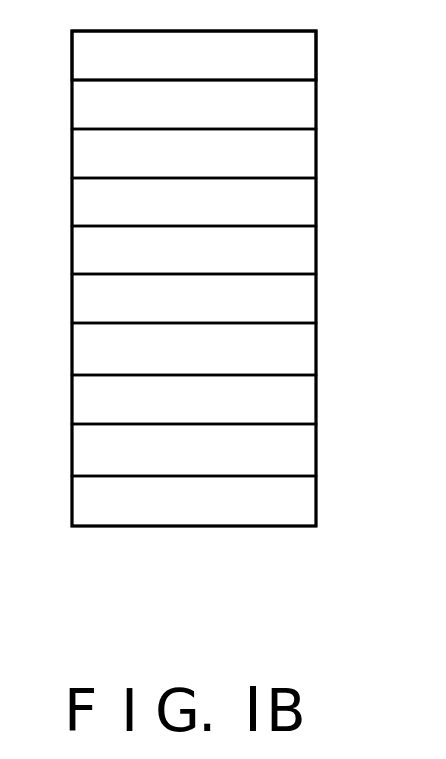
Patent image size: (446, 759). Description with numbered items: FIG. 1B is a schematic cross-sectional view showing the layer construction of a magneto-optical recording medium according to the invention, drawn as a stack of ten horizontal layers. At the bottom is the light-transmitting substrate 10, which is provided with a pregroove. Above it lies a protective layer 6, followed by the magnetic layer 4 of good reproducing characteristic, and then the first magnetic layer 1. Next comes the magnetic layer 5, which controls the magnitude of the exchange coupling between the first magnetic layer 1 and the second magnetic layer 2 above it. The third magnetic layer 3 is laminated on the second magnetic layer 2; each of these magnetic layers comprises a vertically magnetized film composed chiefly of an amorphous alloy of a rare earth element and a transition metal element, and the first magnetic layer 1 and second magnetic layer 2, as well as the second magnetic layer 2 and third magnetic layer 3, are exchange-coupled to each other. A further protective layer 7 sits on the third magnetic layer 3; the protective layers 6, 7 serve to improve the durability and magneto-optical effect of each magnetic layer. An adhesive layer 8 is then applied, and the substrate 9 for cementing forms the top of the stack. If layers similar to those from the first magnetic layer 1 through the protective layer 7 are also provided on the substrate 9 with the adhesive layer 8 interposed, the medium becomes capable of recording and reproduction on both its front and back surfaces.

The substrate for cementing 9 is at (307, 61).
The adhesive layer 8 is at (307, 111).
The protective layer 7 is at (307, 159).
The third magnetic layer 3 is at (307, 209).
The second magnetic layer 2 is at (307, 261).
The magnetic layer for controlling exchange coupling 5 is at (307, 307).
The first magnetic layer 1 is at (307, 357).
The magnetic layer of good reproducing characteristic 4 is at (307, 402).
The protective layer 6 is at (307, 456).
The light-transmitting substrate 10 is at (305, 504).